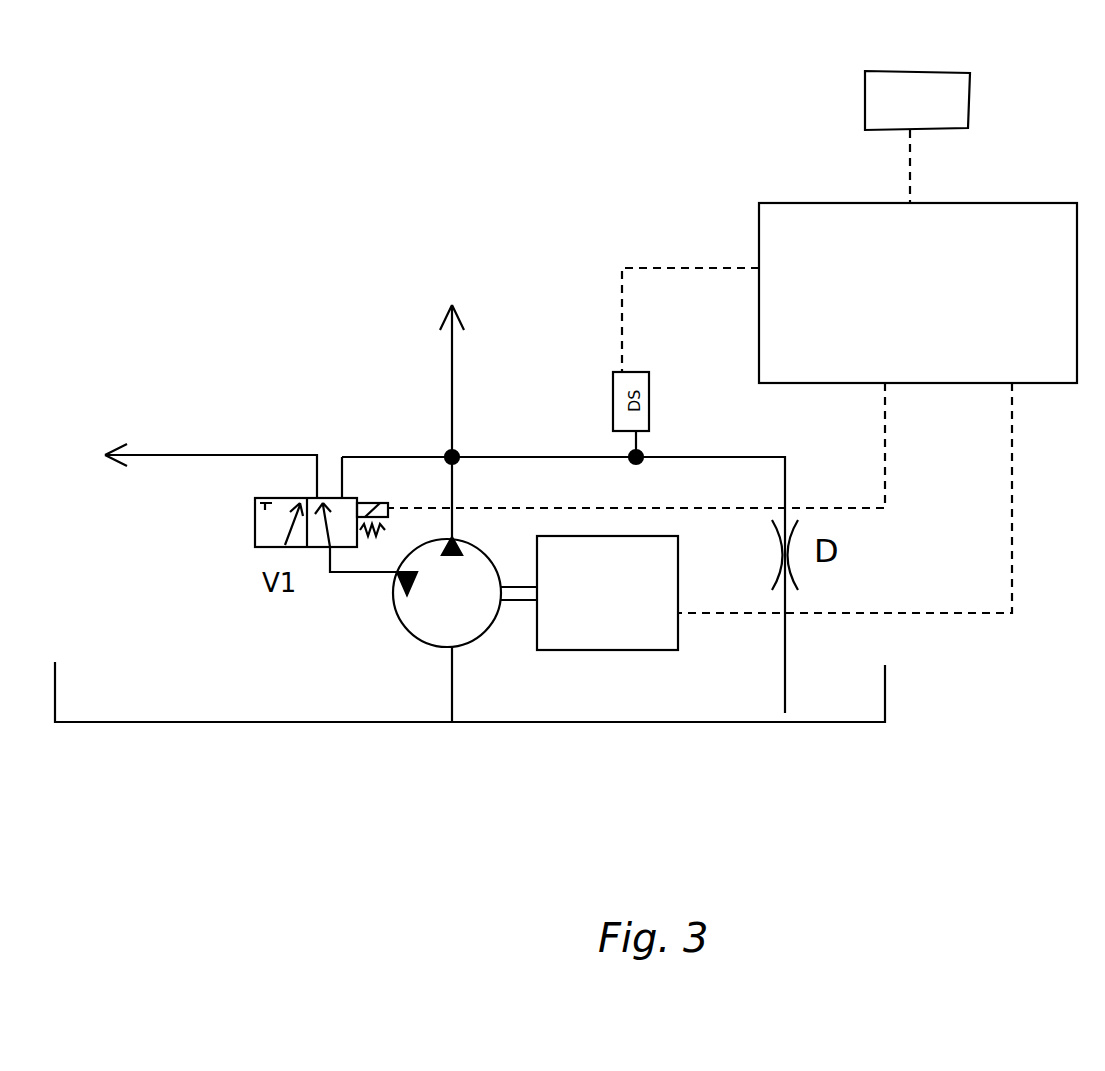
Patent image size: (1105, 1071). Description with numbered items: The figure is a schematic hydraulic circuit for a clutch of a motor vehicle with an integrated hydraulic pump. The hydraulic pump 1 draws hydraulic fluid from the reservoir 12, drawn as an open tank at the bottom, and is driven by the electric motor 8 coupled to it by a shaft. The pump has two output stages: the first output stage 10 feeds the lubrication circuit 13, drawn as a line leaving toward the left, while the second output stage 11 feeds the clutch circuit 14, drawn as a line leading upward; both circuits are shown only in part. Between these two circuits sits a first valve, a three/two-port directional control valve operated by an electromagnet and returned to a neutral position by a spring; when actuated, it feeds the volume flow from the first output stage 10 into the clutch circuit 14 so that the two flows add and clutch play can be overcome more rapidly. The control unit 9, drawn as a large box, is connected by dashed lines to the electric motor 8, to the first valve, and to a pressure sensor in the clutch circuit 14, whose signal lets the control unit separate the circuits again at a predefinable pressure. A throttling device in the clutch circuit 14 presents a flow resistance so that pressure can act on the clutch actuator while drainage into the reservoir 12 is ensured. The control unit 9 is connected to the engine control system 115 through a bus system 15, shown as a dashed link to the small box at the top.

The hydraulic pump 1 is at (412, 637).
The electric motor 8 is at (655, 650).
The control unit 9 is at (732, 408).
The first output stage 10 is at (380, 588).
The second output stage 11 is at (470, 530).
The reservoir 12 is at (110, 722).
The lubrication circuit 13 is at (170, 455).
The clutch circuit 14 is at (450, 405).
The bus system 15 is at (912, 138).
The engine control system 115 is at (968, 102).